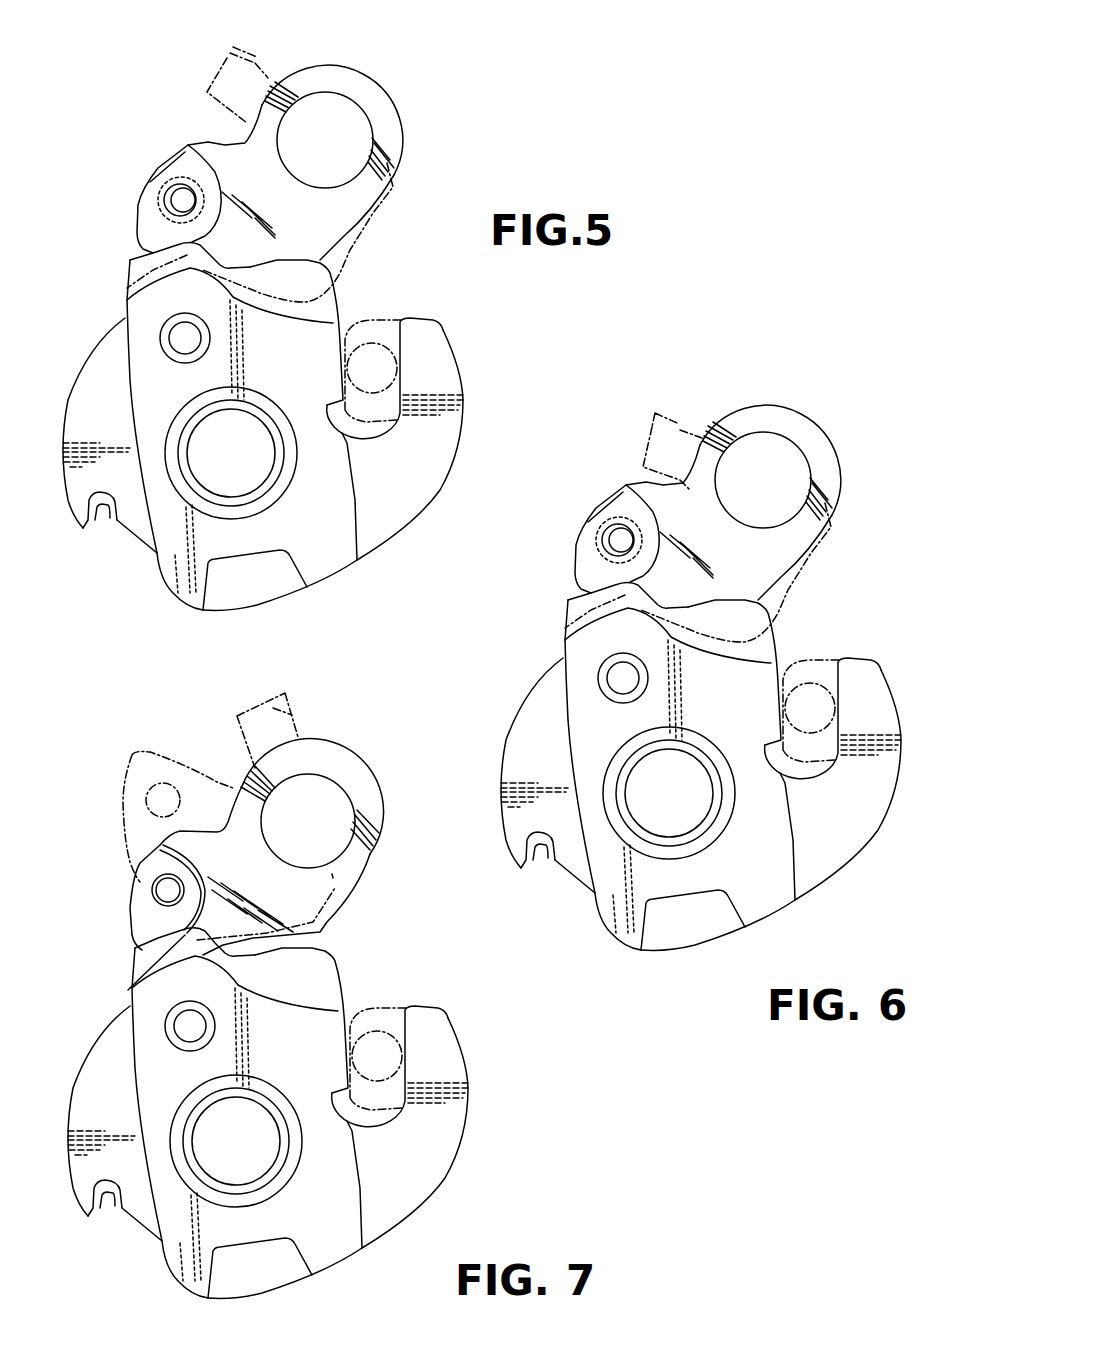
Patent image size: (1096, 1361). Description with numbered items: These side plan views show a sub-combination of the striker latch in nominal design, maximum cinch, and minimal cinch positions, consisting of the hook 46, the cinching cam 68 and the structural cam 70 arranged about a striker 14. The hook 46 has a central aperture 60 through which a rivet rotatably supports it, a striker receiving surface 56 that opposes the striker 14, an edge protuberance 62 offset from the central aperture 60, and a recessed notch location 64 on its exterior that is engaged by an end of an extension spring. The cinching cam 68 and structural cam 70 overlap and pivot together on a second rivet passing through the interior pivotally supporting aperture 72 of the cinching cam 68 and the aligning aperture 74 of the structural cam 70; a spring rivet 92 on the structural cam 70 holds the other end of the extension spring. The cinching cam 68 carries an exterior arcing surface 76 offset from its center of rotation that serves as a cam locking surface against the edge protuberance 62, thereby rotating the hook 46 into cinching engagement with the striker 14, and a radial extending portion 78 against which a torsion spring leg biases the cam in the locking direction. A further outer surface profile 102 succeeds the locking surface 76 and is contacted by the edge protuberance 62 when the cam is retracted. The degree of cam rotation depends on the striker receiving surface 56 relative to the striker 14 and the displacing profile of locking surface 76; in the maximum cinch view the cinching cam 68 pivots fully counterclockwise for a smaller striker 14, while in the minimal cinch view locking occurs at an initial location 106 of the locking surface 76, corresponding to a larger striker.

In FIG. 5, the striker 14 is at (382, 364).
In FIG. 6, the striker 14 is at (860, 711).
In FIG. 7, the striker 14 is at (428, 1045).
In FIG. 5, the hook 46 is at (415, 333).
In FIG. 6, the hook 46 is at (846, 698).
In FIG. 7, the hook 46 is at (430, 1066).
In FIG. 5, the striker receiving surface 56 is at (340, 300).
In FIG. 6, the striker receiving surface 56 is at (713, 772).
In FIG. 7, the striker receiving surface 56 is at (275, 1120).
In FIG. 5, the central aperture 60 is at (233, 428).
In FIG. 6, the central aperture 60 is at (679, 793).
In FIG. 7, the central aperture 60 is at (252, 1141).
In FIG. 5, the edge protuberance 62 is at (129, 260).
In FIG. 6, the edge protuberance 62 is at (605, 572).
In FIG. 7, the edge protuberance 62 is at (154, 944).
In FIG. 5, the recessed notch location 64 is at (93, 510).
In FIG. 6, the recessed notch location 64 is at (511, 861).
In FIG. 7, the recessed notch location 64 is at (76, 1211).
In FIG. 5, the cinching cam 68 is at (380, 210).
In FIG. 6, the cinching cam 68 is at (773, 560).
In FIG. 7, the cinching cam 68 is at (333, 878).
In FIG. 5, the structural cam 70 is at (208, 142).
In FIG. 6, the structural cam 70 is at (703, 520).
In FIG. 7, the structural cam 70 is at (137, 885).
In FIG. 5, the interior pivotally supporting aperture 72 is at (375, 125).
In FIG. 6, the interior pivotally supporting aperture 72 is at (803, 454).
In FIG. 7, the interior pivotally supporting aperture 72 is at (342, 799).
In FIG. 5, the aligning aperture 74 is at (323, 93).
In FIG. 6, the aligning aperture 74 is at (763, 480).
In FIG. 7, the aligning aperture 74 is at (318, 780).
In FIG. 5, the exterior arcing surface 76 is at (125, 289).
In FIG. 6, the exterior arcing surface 76 is at (566, 611).
In FIG. 7, the exterior arcing surface 76 is at (122, 800).
In FIG. 5, the radial extending portion 78 is at (216, 78).
In FIG. 6, the radial extending portion 78 is at (684, 416).
In FIG. 7, the radial extending portion 78 is at (293, 706).
In FIG. 5, the spring rivet 92 is at (164, 199).
In FIG. 6, the spring rivet 92 is at (582, 534).
In FIG. 7, the spring rivet 92 is at (168, 890).
In FIG. 7, the outer surface profile 102 is at (227, 932).
In FIG. 7, the initial location 106 is at (122, 973).